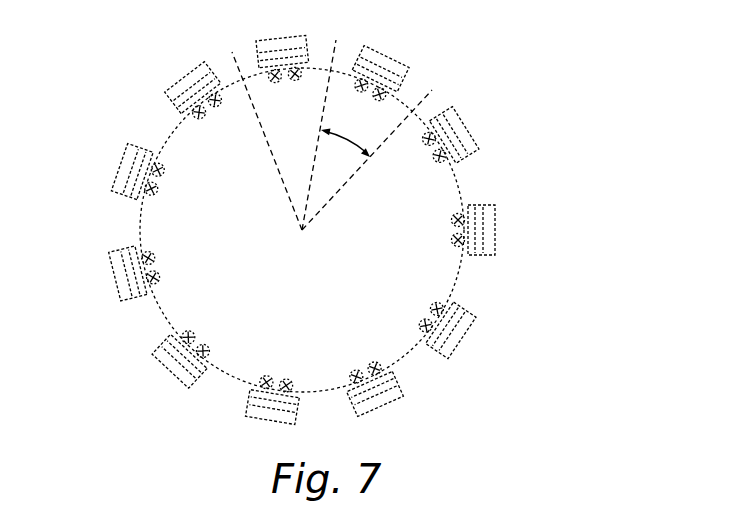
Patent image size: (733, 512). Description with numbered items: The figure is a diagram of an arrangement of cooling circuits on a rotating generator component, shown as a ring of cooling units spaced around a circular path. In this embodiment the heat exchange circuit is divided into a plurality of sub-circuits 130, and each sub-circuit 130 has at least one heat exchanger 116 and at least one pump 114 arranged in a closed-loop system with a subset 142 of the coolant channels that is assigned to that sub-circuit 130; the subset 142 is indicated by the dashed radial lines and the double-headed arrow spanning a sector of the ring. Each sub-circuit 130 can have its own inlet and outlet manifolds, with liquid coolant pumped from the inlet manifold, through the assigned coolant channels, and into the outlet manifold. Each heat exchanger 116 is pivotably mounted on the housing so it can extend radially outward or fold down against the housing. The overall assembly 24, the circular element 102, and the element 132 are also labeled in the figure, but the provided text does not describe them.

The conveyor system 24 is at (576, 170).
The circular track 102 is at (463, 275).
The pump 114 is at (207, 344).
The heat exchanger 116 is at (117, 275).
The sub-circuit 130 is at (106, 162).
The wheel 132 is at (430, 338).
The subset of the coolant channels 142 is at (350, 138).